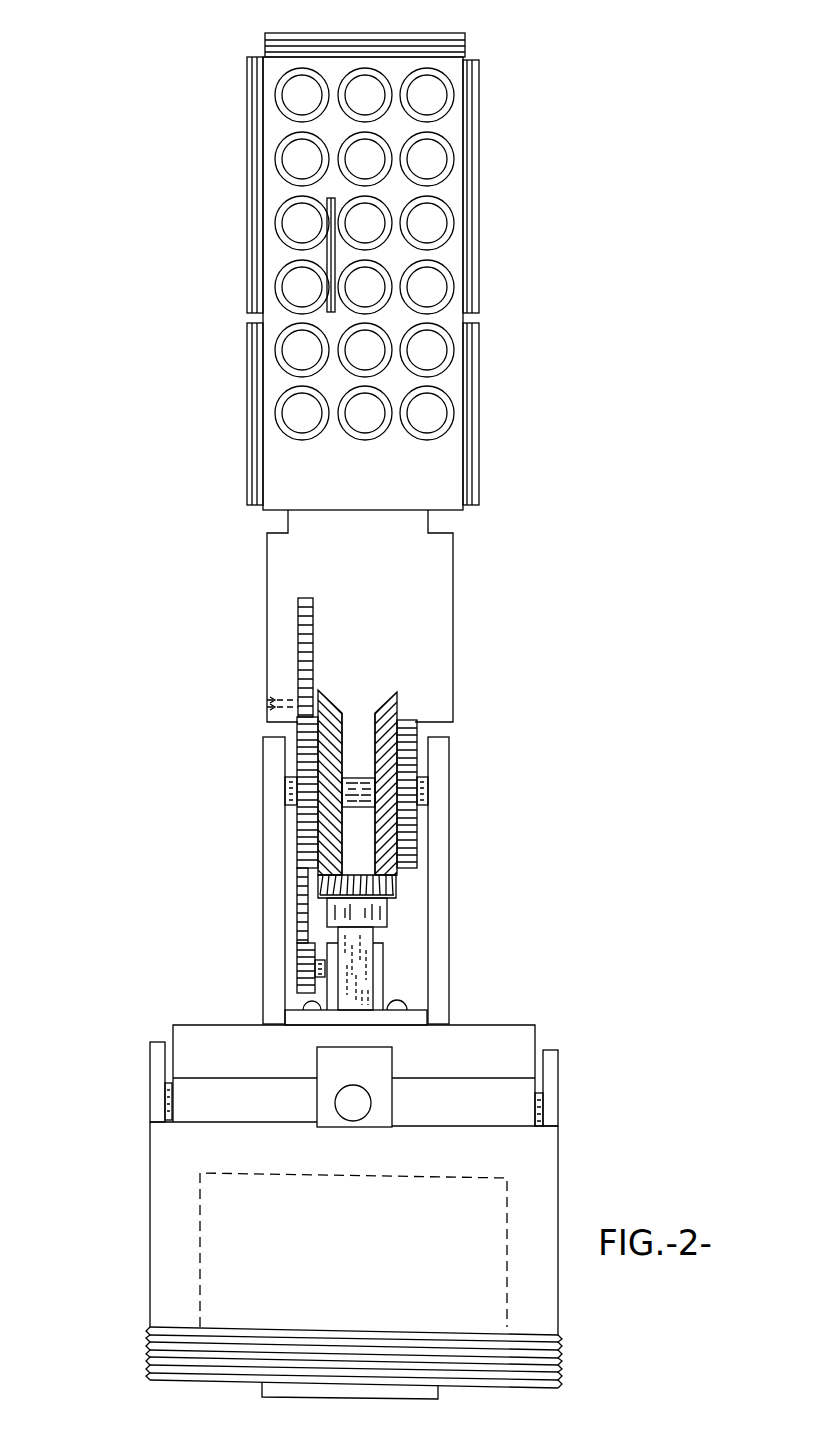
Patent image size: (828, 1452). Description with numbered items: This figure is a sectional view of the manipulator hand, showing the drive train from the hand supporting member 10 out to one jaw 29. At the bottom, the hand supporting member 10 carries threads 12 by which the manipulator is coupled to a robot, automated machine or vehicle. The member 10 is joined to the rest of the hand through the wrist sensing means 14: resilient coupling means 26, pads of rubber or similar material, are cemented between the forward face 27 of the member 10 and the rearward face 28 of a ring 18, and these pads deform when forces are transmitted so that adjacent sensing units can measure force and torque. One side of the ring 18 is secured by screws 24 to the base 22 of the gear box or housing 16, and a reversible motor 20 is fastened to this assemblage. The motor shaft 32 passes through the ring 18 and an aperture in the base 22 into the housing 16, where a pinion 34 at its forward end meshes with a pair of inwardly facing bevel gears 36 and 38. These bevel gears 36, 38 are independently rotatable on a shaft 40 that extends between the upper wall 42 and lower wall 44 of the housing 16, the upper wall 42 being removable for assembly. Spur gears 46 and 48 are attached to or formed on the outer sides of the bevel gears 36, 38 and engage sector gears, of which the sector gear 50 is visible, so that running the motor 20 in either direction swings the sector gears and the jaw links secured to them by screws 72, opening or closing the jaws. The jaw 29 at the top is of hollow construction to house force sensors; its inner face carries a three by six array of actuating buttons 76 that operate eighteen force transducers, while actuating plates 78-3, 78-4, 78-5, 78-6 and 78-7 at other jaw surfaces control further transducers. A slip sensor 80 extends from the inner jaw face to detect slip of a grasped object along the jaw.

The hand supporting member 10 is at (150, 1266).
The threads 12 is at (148, 1345).
The wrist sensing means 14 is at (574, 1102).
The gear box or housing 16 is at (452, 867).
The ring 18 is at (525, 1037).
The reversible motor 20 is at (200, 1223).
The base 22 is at (413, 1022).
The screws 24 is at (403, 1005).
The resilient coupling means 26 is at (280, 1108).
The forward face 27 is at (152, 1112).
The rearward face 28 is at (165, 1085).
The jaw 29 is at (246, 113).
The motor shaft 32 is at (358, 942).
The pinion 34 is at (383, 908).
The bevel gear 36 is at (327, 695).
The bevel gear 38 is at (383, 707).
The shaft 40 is at (357, 787).
The upper wall 42 is at (273, 872).
The lower wall 44 is at (450, 837).
The spur gear 46 is at (305, 733).
The spur gear 48 is at (410, 721).
The sector gear 50 is at (298, 610).
The screws 72 is at (285, 698).
The buttons 76 is at (430, 162).
The actuating plate 78-3 is at (417, 33).
The actuating plate 78-4 is at (247, 181).
The actuating plate 78-5 is at (247, 373).
The actuating plate 78-6 is at (480, 265).
The actuating plate 78-7 is at (478, 450).
The slip sensor 80 is at (328, 197).